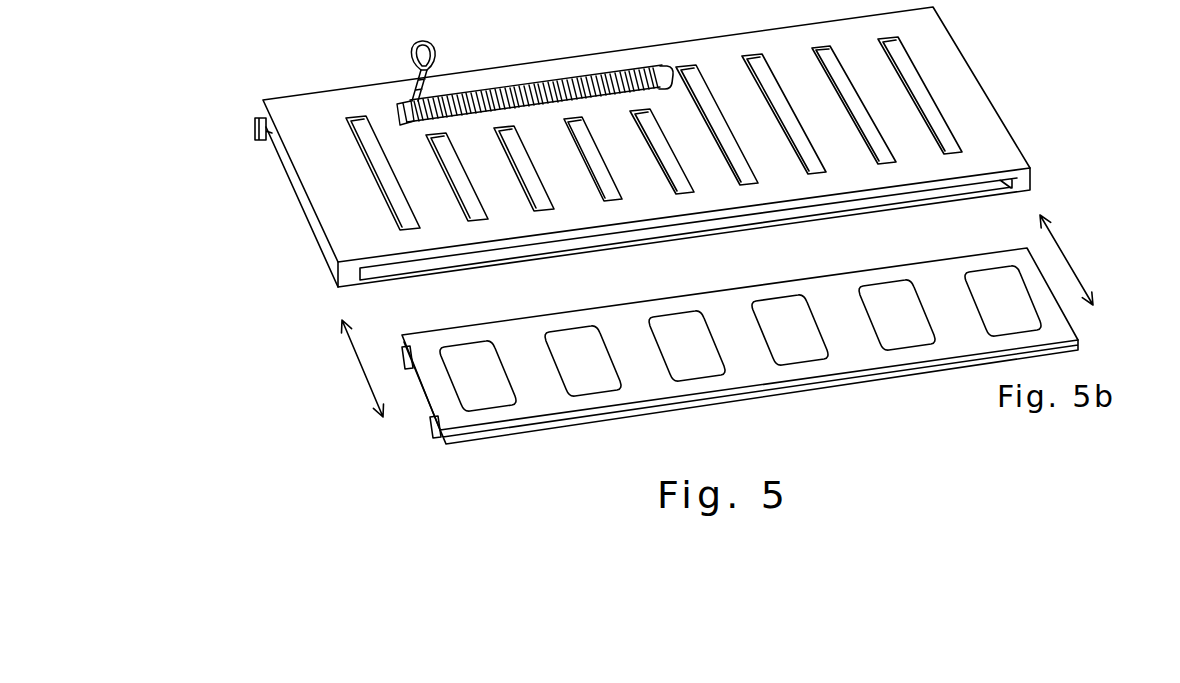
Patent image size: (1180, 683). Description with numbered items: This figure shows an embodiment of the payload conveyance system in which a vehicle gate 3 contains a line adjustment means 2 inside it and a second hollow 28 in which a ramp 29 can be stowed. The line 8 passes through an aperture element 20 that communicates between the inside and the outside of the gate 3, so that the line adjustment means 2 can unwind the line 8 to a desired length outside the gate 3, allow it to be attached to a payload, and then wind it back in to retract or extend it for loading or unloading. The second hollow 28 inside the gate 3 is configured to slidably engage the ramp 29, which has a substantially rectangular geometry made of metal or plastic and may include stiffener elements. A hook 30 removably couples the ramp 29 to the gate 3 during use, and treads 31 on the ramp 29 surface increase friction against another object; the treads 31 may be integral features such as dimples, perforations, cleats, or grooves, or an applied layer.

In FIG. 5, the line adjustment means 2 is at (508, 97).
In FIG. 5, the gate 3 is at (950, 52).
In FIG. 5, the line 8 is at (412, 90).
In FIG. 5, the aperture element 20 is at (655, 65).
In FIG. 5, the second hollow 28 is at (1010, 195).
In FIG. 5B, the ramp 29 is at (1062, 328).
In FIG. 5B, the hook 30 is at (430, 432).
In FIG. 5B, the tread 31 is at (693, 373).